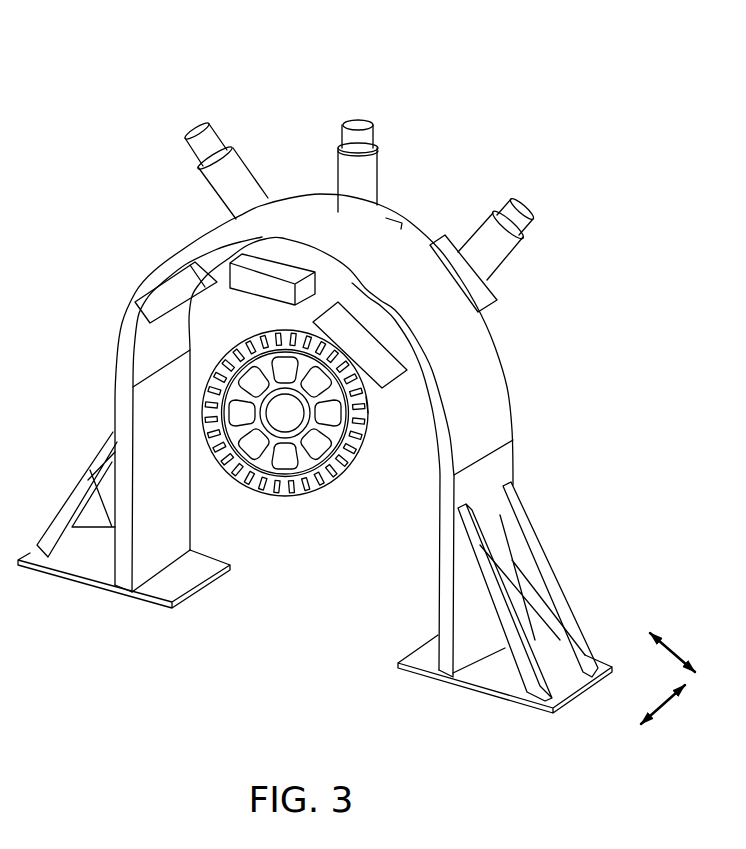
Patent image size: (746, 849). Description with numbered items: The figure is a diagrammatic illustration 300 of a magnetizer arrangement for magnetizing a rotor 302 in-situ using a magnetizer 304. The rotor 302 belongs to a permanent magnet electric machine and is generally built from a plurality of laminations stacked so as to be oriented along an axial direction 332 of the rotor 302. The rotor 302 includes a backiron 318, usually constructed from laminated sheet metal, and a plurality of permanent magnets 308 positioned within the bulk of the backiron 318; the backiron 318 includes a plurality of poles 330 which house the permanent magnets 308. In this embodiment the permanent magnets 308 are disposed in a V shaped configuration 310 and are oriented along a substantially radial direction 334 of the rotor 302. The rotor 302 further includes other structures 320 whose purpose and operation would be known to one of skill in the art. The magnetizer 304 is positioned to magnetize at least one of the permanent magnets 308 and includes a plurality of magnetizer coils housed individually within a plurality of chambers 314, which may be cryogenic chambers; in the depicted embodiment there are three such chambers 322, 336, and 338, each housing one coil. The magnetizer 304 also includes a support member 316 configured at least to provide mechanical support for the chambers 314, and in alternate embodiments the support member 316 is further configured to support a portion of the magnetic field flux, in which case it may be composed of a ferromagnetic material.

The diagrammatic illustration 300 is at (585, 52).
The rotor 302 is at (306, 504).
The magnetizer 304 is at (519, 376).
The permanent magnets 308 is at (213, 455).
The V shaped configuration 310 is at (275, 290).
The chambers 314 is at (221, 265).
The support member 316 is at (498, 417).
The backiron 318 is at (275, 486).
The other structures 320 is at (279, 410).
The chamber 322 is at (152, 293).
The poles 330 is at (370, 397).
The axial direction 332 is at (672, 700).
The radial direction 334 is at (677, 650).
The chamber 336 is at (272, 350).
The chamber 338 is at (374, 328).